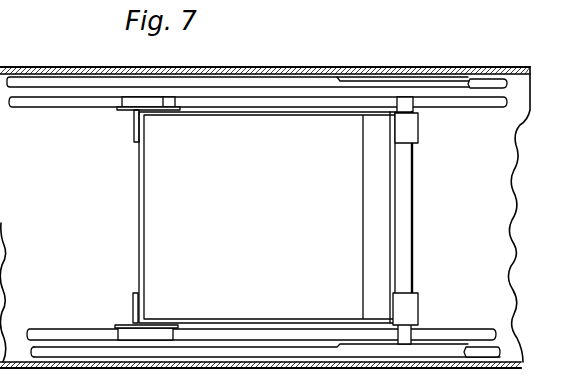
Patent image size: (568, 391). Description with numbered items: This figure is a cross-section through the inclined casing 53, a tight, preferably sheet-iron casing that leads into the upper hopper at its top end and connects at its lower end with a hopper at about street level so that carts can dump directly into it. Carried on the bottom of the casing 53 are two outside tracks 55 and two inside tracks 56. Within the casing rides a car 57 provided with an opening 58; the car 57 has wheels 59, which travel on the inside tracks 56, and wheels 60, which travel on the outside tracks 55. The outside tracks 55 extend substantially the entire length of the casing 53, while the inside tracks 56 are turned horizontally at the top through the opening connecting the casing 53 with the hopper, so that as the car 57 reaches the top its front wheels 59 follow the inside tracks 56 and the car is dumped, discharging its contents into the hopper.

The inclined casing 53 is at (265, 207).
The outside tracks 55 is at (488, 80).
The inside tracks 56 is at (90, 100).
The car 57 is at (139, 188).
The opening 58 is at (253, 217).
The wheels 59 is at (153, 103).
The wheels 60 is at (400, 85).